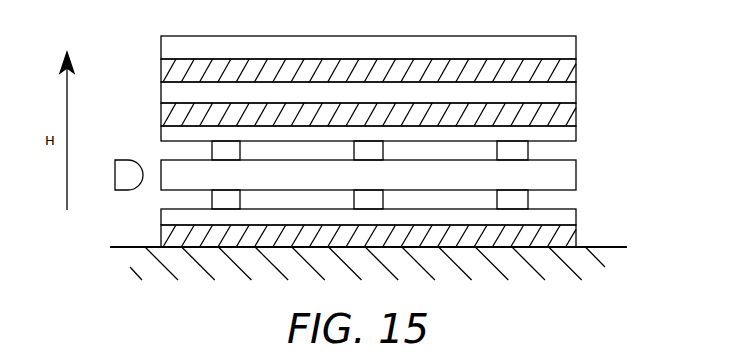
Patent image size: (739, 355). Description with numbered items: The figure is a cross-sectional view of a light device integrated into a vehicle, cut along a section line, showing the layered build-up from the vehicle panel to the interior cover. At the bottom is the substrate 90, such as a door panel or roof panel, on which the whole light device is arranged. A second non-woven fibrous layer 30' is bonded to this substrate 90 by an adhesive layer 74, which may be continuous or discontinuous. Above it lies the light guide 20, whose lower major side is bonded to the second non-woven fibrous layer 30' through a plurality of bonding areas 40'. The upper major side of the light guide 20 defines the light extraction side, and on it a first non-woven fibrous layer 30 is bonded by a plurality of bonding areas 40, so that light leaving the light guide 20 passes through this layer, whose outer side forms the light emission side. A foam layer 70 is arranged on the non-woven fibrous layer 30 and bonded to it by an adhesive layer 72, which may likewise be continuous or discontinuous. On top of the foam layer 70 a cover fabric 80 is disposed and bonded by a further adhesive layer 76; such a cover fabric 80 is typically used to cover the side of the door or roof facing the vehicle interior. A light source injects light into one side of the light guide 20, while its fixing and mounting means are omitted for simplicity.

The light guide 20 is at (577, 180).
The non-woven fibrous layer 30 is at (393, 135).
The second non-woven fibrous layer 30' is at (395, 220).
The bonding areas 40 is at (436, 152).
The bonding areas 40' is at (438, 196).
The foam layer 70 is at (161, 94).
The adhesive layer 72 is at (577, 111).
The adhesive layer 74 is at (577, 239).
The adhesive layer 76 is at (577, 70).
The cover fabric 80 is at (161, 48).
The substrate 90 is at (127, 246).